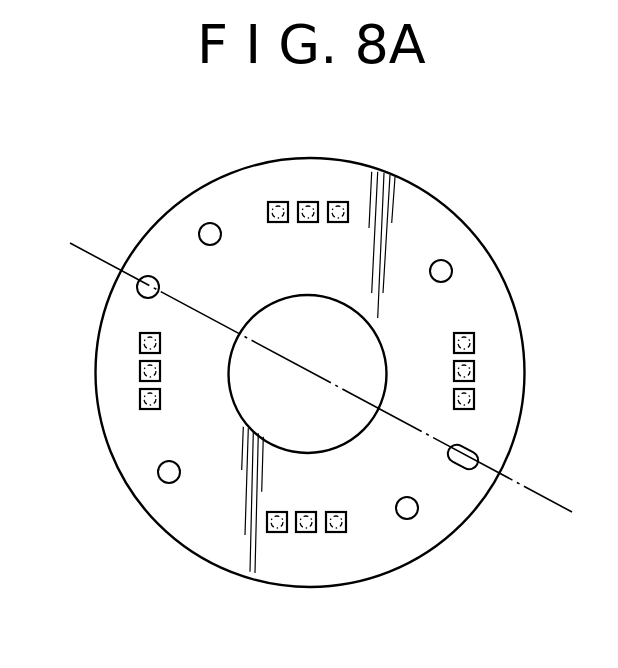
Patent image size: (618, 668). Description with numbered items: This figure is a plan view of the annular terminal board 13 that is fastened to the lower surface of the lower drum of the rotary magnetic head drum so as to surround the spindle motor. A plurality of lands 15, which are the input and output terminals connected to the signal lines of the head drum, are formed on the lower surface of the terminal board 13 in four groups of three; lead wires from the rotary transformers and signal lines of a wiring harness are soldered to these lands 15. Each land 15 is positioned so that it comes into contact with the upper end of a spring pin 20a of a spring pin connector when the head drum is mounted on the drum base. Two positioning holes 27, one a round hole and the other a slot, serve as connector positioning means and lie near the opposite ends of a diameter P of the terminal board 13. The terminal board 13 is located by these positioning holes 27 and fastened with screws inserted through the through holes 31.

The terminal board 13 is at (220, 187).
The lands 15 is at (338, 202).
The spring pins 20a is at (278, 222).
The through holes 31 is at (203, 225).
The positioning holes 27 is at (147, 275).
The diameter P is at (88, 257).